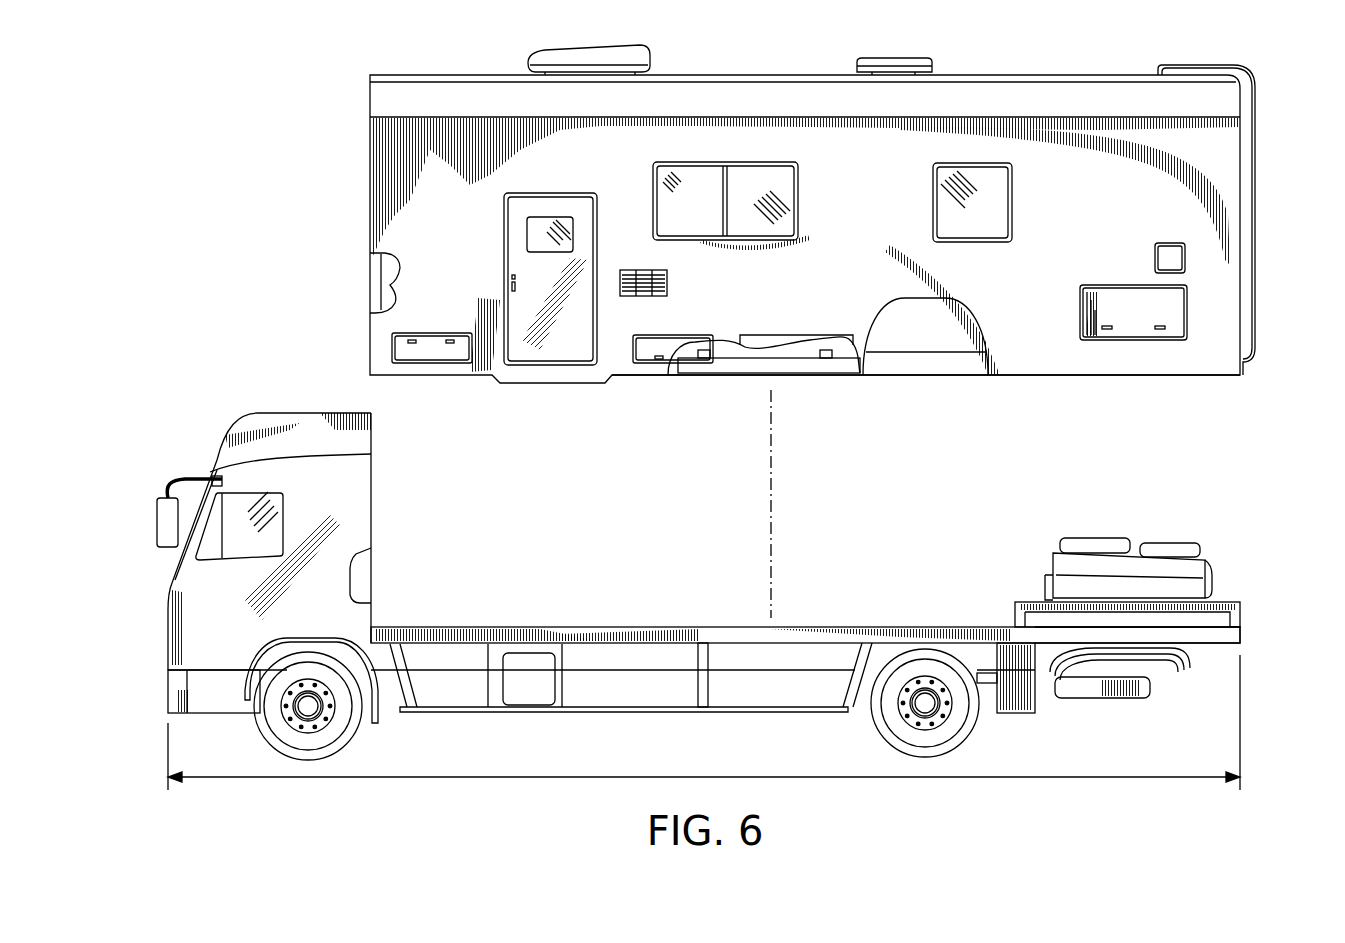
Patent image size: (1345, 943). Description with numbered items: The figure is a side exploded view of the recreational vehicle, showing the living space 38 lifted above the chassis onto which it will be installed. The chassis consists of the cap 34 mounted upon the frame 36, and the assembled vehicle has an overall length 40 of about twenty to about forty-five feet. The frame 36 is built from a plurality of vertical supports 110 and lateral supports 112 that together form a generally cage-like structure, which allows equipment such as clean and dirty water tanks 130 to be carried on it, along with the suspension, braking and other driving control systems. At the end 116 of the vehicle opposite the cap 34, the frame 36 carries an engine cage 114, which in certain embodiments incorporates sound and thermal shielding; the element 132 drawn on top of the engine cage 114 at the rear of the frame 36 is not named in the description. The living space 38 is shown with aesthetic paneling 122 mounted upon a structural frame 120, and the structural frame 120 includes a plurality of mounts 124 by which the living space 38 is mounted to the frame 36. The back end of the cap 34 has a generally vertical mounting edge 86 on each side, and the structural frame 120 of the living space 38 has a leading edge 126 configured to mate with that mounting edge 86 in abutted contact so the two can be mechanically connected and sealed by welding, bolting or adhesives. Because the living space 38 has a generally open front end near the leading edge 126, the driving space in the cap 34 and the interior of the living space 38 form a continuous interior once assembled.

The cap 34 is at (298, 559).
The frame 36 is at (847, 619).
The living space 38 is at (803, 245).
The overall length 40 is at (1018, 779).
The mounting edge 86 is at (371, 573).
The vertical supports 110 is at (700, 663).
The lateral supports 112 is at (623, 635).
The engine cage 114 is at (1238, 618).
The end 116 is at (1240, 637).
The structural frame 120 is at (800, 373).
The aesthetic paneling 122 is at (1215, 375).
The mounts 124 is at (690, 358).
The leading edge 126 is at (370, 281).
The clean and dirty water tanks 130 is at (527, 663).
The generator 132 is at (1195, 575).